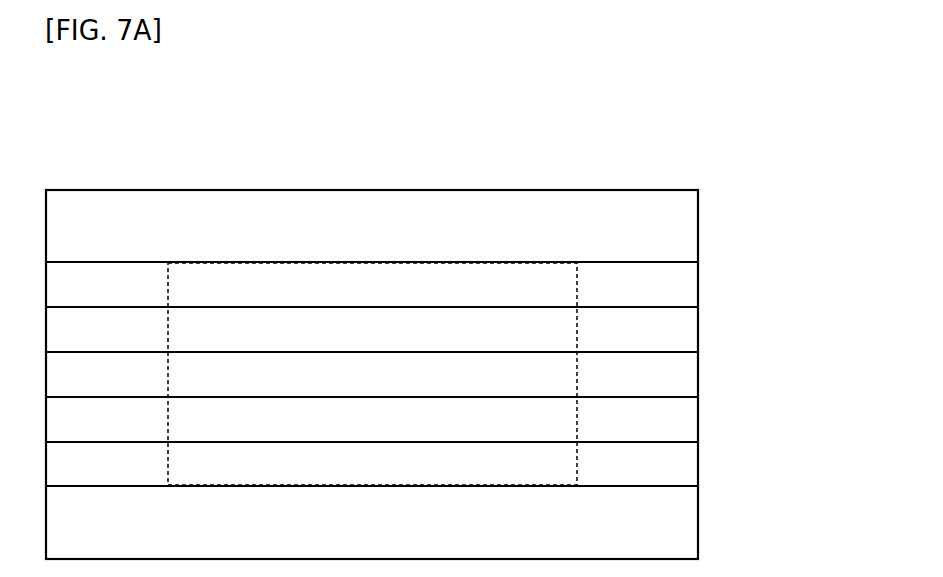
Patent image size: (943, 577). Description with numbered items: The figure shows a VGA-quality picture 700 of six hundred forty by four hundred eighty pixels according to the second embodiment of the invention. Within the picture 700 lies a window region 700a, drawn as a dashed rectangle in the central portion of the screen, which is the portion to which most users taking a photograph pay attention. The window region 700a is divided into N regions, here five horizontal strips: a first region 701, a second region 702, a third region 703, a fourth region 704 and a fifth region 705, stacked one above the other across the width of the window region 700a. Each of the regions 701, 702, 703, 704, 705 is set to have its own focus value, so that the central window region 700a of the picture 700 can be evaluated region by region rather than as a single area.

The VGA-quality picture 700 is at (435, 311).
The window region 700a is at (577, 263).
The first region 701 is at (565, 287).
The second region 702 is at (565, 332).
The third region 703 is at (565, 377).
The fourth region 704 is at (565, 422).
The fifth region 705 is at (565, 467).